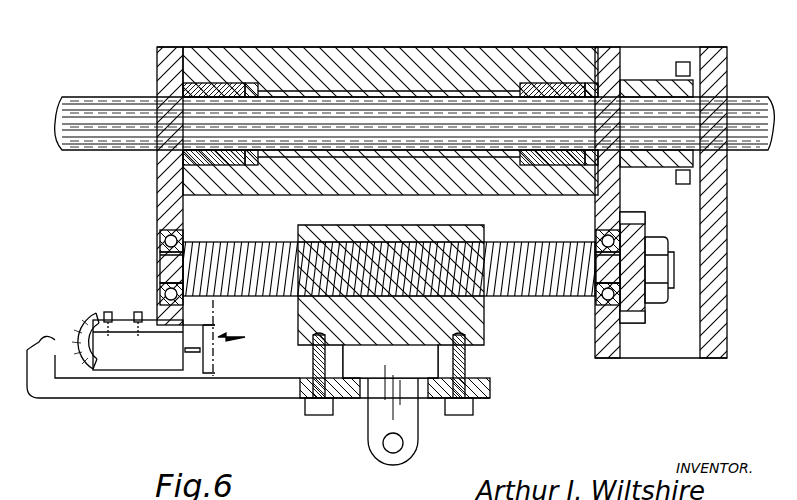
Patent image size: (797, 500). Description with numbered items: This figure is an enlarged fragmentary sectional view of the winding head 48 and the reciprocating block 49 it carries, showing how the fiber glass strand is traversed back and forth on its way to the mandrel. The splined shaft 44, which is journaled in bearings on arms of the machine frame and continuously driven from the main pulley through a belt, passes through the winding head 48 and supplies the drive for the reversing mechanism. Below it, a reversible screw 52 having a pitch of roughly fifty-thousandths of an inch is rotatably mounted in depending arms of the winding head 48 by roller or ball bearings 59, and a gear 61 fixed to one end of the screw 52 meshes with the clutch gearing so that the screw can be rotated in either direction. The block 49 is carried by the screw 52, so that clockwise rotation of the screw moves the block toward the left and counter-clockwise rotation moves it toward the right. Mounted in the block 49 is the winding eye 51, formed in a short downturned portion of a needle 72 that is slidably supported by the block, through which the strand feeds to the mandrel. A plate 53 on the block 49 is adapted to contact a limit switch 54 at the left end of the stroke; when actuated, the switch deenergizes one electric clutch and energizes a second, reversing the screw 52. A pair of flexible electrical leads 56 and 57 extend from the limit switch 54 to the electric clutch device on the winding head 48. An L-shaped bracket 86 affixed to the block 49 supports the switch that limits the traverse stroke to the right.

The splined shaft 44 is at (115, 95).
The winding head 48 is at (341, 45).
The reciprocating block 49 is at (484, 342).
The winding eye 51 is at (412, 442).
The reversible screw 52 is at (524, 242).
The plate 53 is at (282, 332).
The limit switch 54 is at (186, 383).
The flexible electrical lead 56 is at (58, 328).
The flexible electrical lead 57 is at (86, 321).
The roller or ball bearings 59 is at (161, 240).
The gear 61 is at (648, 318).
The needle 72 is at (478, 373).
The L-shaped bracket 86 is at (116, 400).